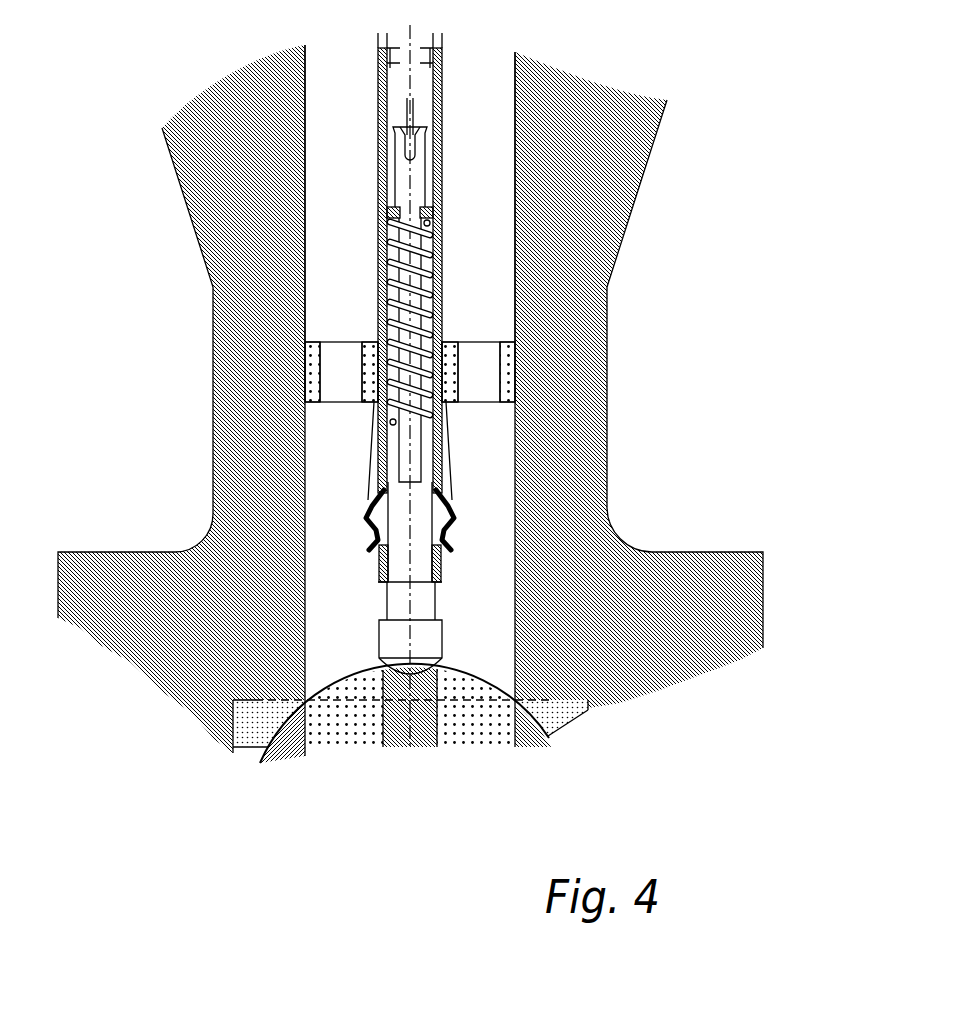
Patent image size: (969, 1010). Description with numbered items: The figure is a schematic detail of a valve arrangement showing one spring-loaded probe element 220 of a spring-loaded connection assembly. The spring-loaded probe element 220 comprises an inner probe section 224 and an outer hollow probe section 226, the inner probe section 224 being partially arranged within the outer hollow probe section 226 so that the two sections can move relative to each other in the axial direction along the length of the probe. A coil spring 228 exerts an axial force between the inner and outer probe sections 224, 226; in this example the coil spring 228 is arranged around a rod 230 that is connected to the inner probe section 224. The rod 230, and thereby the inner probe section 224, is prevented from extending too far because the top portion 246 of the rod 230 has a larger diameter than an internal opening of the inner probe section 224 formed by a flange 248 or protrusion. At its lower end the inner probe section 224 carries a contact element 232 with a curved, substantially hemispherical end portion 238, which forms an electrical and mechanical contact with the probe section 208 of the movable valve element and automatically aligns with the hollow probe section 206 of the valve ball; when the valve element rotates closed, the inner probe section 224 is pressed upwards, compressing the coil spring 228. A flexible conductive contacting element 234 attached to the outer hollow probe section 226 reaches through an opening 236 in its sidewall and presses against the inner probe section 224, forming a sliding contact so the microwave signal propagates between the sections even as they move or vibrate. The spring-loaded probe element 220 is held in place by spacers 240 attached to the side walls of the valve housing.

The hollow probe section 206 is at (390, 692).
The probe section 208 is at (380, 738).
The spring-loaded probe element 220 is at (357, 285).
The inner probe section 224 is at (427, 607).
The outer hollow probe section 226 is at (433, 221).
The coil spring 228 is at (515, 370).
The rod 230 is at (395, 191).
The contact element 232 is at (435, 640).
The contacting element 234 is at (372, 515).
The opening 236 is at (440, 552).
The curved end portion 238 is at (427, 673).
The spacer 240 is at (433, 293).
The top portion 246 is at (430, 128).
The flange 248 is at (433, 207).